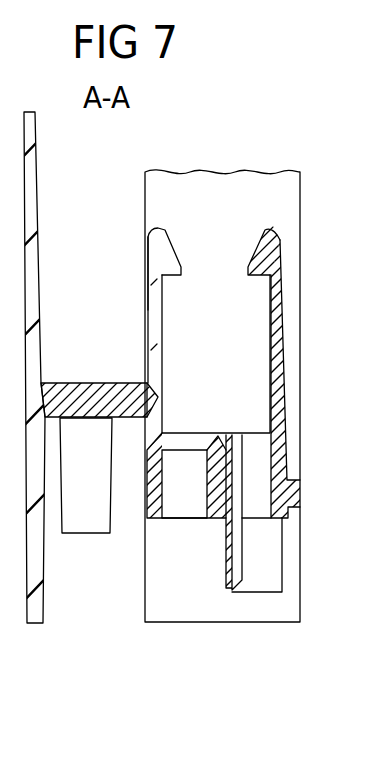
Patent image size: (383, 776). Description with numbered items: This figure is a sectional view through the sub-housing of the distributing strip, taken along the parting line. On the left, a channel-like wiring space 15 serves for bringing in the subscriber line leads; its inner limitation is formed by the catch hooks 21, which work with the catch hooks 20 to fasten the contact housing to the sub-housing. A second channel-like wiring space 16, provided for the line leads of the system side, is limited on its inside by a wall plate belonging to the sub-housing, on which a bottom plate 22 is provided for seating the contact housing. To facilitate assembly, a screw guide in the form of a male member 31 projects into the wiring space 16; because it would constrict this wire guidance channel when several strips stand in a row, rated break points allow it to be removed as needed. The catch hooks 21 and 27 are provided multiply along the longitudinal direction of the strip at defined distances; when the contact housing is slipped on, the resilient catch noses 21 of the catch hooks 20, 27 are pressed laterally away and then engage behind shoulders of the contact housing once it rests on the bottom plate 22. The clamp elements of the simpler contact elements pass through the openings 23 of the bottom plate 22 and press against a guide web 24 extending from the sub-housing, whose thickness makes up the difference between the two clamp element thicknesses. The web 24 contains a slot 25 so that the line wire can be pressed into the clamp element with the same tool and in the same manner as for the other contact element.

The wiring space 15 is at (92, 290).
The wiring space 16 is at (88, 557).
The catch hook 20 is at (276, 335).
The catch hooks 21 is at (260, 257).
The bottom plate 22 is at (182, 440).
The openings 23 is at (228, 443).
The guide web 24 is at (237, 522).
The slot 25 is at (232, 567).
The catch hook 27 is at (157, 316).
The male member 31 is at (97, 512).